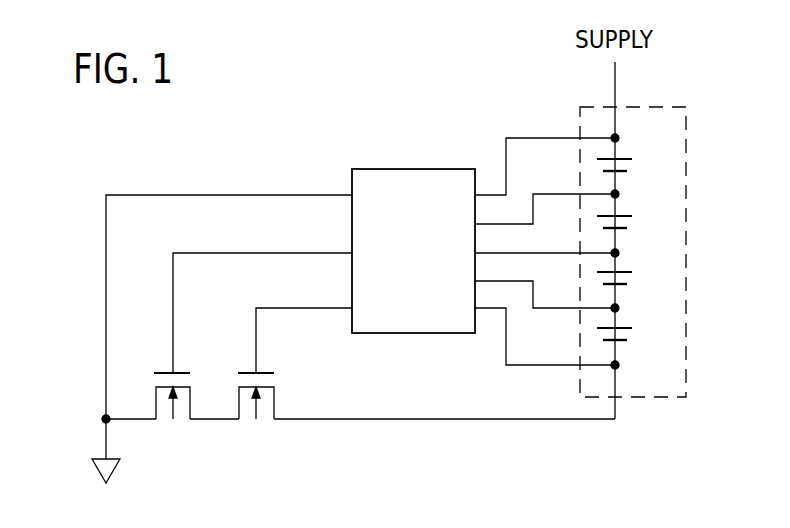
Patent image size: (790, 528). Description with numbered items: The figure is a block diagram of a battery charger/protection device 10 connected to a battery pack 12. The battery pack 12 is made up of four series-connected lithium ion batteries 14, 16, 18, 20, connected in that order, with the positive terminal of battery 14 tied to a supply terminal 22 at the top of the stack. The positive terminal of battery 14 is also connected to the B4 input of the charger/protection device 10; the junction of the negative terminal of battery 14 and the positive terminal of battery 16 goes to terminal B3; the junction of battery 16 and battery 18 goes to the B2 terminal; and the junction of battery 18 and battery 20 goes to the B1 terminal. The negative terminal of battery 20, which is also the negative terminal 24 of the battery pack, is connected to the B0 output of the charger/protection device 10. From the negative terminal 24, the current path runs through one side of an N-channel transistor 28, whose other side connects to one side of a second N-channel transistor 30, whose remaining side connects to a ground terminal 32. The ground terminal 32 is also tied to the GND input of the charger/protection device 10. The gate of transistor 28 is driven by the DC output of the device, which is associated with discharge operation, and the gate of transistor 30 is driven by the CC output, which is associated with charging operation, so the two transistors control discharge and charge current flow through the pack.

The battery charger/protection device 10 is at (400, 169).
The battery pack 12 is at (689, 327).
The lithium ion battery 14 is at (627, 157).
The lithium ion battery 16 is at (627, 214).
The lithium ion battery 18 is at (627, 270).
The lithium ion battery 20 is at (627, 326).
The supply terminal 22 is at (617, 86).
The negative terminal of the battery pack 24 is at (413, 419).
The N-channel transistor 28 is at (276, 407).
The N-channel transistor 30 is at (192, 407).
The ground terminal 32 is at (100, 419).